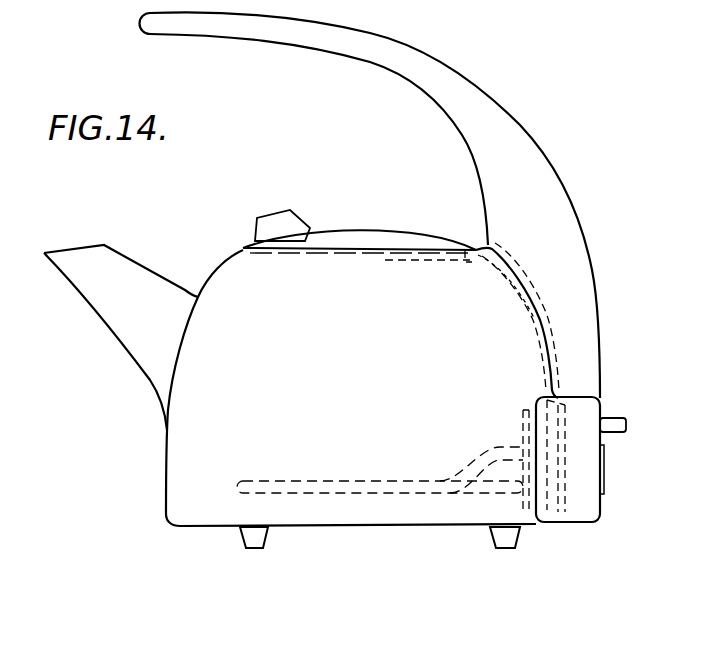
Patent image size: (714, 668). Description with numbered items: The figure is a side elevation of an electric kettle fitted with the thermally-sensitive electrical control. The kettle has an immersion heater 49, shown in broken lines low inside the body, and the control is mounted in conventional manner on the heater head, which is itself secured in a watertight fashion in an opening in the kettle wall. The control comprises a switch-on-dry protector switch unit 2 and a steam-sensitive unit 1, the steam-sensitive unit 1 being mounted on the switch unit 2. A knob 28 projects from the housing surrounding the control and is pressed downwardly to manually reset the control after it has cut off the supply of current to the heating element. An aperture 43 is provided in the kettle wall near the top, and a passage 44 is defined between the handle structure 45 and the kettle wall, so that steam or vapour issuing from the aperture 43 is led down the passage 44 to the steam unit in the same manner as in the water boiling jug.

The steam-sensitive unit 1 is at (570, 496).
The switch-on-dry protector switch unit 2 is at (536, 458).
The knob 28 is at (612, 418).
The aperture 43 is at (487, 262).
The passage 44 is at (543, 300).
The handle structure 45 is at (538, 222).
The immersion heater 49 is at (314, 452).